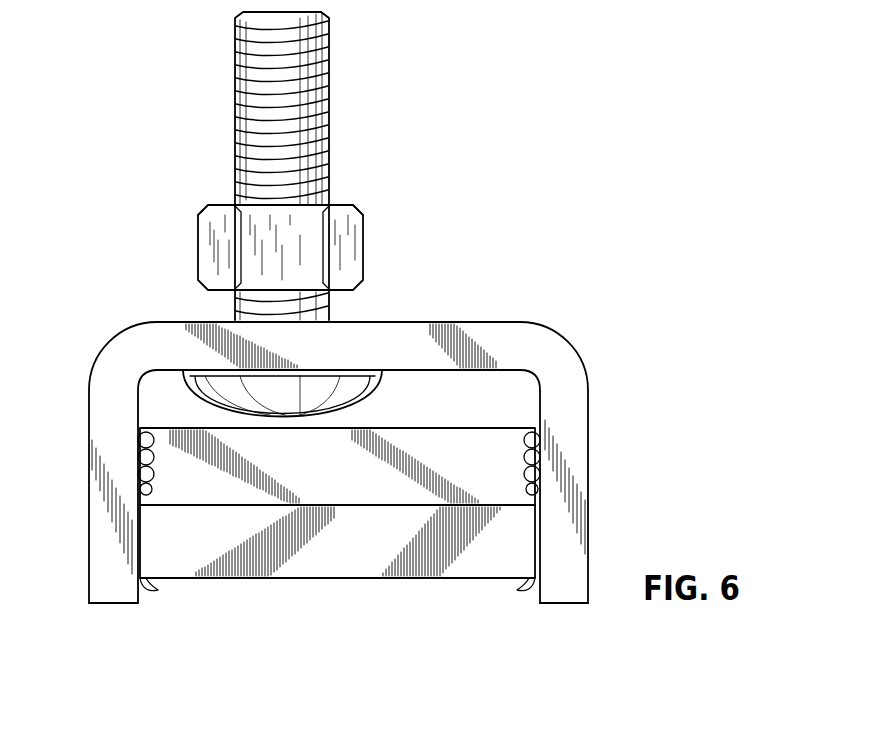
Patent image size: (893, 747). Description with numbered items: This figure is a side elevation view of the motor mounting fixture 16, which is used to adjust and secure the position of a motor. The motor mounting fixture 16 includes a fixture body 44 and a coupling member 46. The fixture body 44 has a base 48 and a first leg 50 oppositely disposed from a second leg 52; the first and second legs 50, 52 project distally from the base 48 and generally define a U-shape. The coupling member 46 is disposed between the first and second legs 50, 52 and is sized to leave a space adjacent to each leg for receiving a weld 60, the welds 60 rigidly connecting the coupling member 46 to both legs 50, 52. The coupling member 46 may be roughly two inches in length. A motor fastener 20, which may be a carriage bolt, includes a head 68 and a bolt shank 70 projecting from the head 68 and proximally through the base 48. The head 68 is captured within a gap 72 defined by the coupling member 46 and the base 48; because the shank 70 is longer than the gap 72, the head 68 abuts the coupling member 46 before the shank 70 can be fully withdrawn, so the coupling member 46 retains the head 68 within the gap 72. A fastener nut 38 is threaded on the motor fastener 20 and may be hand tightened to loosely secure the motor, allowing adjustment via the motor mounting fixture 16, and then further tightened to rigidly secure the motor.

The motor mounting fixture 16 is at (150, 130).
The motor fastener 20 is at (307, 166).
The bolt shank 70 is at (322, 181).
The fastener nut 38 is at (363, 232).
The fixture body 44 is at (337, 453).
The base 48 is at (501, 336).
The first leg 50 is at (112, 606).
The second leg 52 is at (565, 606).
The coupling member 46 is at (335, 580).
The weld 60 is at (140, 438).
The head 68 is at (350, 392).
The gap 72 is at (461, 401).